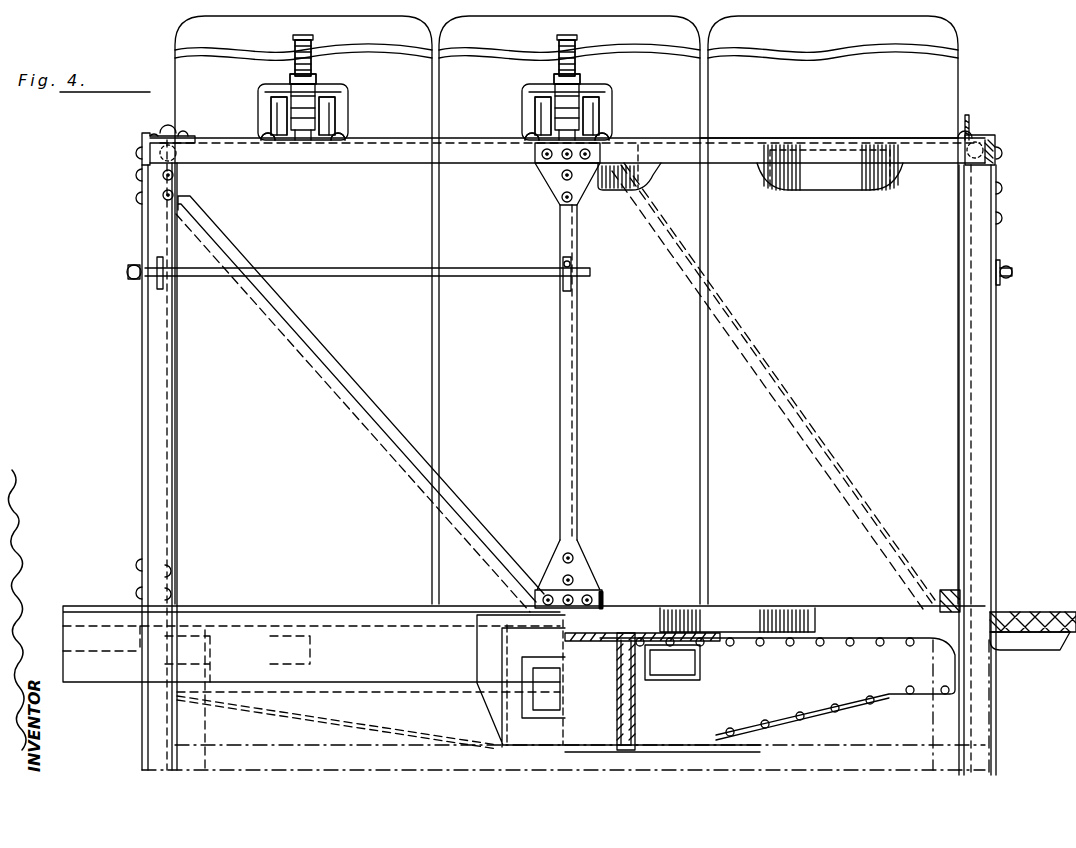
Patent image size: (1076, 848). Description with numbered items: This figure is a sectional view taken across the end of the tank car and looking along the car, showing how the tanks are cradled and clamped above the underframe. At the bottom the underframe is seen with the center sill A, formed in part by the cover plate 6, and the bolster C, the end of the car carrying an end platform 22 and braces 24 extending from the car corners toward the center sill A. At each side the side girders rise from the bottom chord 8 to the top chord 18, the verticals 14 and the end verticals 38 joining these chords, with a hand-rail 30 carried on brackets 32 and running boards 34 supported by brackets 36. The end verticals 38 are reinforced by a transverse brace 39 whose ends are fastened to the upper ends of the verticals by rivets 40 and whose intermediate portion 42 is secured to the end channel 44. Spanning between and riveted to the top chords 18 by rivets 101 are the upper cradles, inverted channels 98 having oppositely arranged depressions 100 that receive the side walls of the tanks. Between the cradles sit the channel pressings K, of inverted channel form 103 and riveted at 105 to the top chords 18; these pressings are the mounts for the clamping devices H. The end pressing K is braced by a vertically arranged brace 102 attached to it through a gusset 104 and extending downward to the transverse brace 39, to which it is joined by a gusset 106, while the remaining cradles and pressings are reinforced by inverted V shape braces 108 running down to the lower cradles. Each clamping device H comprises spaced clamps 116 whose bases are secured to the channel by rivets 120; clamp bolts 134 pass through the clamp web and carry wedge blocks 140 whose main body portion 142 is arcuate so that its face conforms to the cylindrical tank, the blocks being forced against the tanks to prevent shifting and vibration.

The cover plate 6 is at (618, 683).
The bottom chord 8 is at (176, 590).
The verticals 14 is at (984, 470).
The top chord 18 is at (968, 115).
The end platform 22 is at (320, 606).
The braces 24 is at (700, 663).
The hand-rail 30 is at (348, 267).
The brackets 32 is at (128, 282).
The running boards 34 is at (576, 60).
The brackets 36 is at (1042, 650).
The end verticals 38 is at (155, 443).
The transverse braces 39 is at (358, 410).
The rivets 40 is at (175, 196).
The intermediate portion 42 is at (532, 592).
The end channel 44 is at (762, 608).
The inverted channel 98 is at (740, 150).
The depressions 100 is at (612, 192).
The rivets 101 is at (978, 138).
The vertically arranged brace 102 is at (573, 396).
The inverted channel 103 is at (352, 162).
The gusset 104 is at (548, 175).
The rivets 105 is at (155, 138).
The gusset 106 is at (585, 580).
The inverted V shape braces 108 is at (832, 446).
The clamps 116 is at (288, 120).
The rivets 120 is at (340, 132).
The clamp bolts 134 is at (311, 58).
The wedge blocks 140 is at (349, 90).
The main body portion 142 is at (348, 110).
The clamping devices H is at (262, 84).
The channel pressings K is at (304, 160).
The center sill A is at (628, 712).
The bolsters C is at (799, 677).